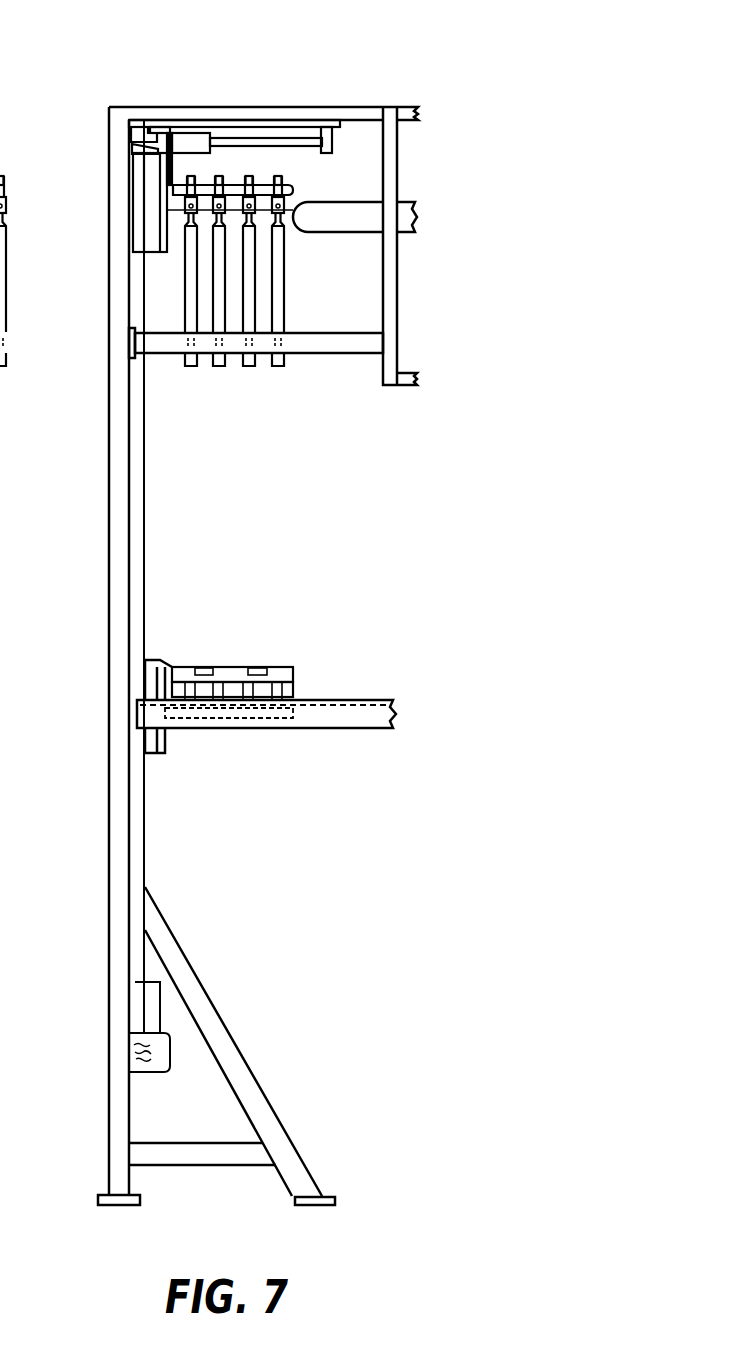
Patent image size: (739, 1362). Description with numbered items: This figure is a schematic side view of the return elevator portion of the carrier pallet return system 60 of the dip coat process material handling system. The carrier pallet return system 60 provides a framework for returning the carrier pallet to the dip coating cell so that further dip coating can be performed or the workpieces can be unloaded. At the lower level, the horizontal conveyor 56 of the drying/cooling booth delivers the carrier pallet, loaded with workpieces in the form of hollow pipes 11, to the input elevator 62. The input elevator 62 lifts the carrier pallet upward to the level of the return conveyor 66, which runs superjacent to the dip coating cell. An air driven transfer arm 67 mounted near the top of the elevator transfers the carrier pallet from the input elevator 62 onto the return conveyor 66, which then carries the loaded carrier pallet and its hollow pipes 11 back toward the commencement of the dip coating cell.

The carrier pallet return system 60 is at (421, 58).
The input elevator 62 is at (87, 113).
The air driven transfer arm 67 is at (308, 177).
The return conveyor 66 is at (417, 211).
The hollow pipes 11 is at (277, 297).
The horizontal conveyor 56 is at (337, 720).